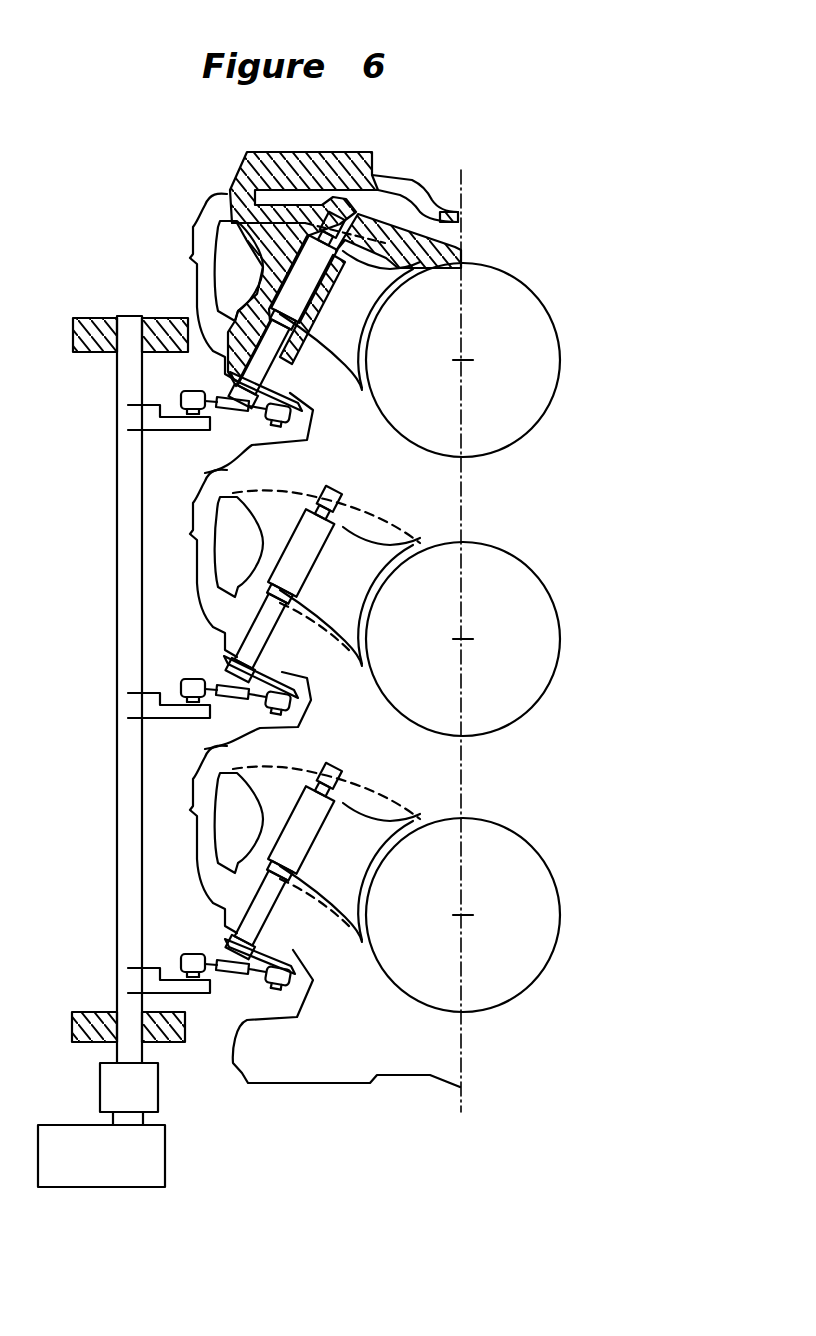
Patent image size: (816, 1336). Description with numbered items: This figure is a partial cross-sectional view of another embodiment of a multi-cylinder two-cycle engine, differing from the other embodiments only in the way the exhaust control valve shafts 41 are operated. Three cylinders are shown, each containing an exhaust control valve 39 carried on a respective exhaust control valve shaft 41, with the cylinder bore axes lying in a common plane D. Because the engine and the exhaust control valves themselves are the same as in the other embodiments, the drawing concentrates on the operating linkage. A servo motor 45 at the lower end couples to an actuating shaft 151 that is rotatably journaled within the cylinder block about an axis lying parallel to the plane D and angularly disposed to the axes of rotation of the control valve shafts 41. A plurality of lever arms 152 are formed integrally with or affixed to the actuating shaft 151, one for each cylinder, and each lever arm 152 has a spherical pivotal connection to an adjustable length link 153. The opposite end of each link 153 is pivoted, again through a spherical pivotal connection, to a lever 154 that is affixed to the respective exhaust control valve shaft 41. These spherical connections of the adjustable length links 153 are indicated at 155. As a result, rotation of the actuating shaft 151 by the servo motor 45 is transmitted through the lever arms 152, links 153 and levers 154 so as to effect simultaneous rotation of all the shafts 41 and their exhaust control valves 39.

The exhaust control valve 39 is at (408, 270).
The exhaust control valve shaft 41 is at (330, 224).
The servo motor 45 is at (167, 1147).
The actuating shaft 151 is at (120, 803).
The lever arm 152 is at (160, 433).
The adjustable length link 153 is at (247, 413).
The lever 154 is at (233, 377).
The spherical pivotal connection 155 is at (178, 402).
The plane D is at (514, 278).